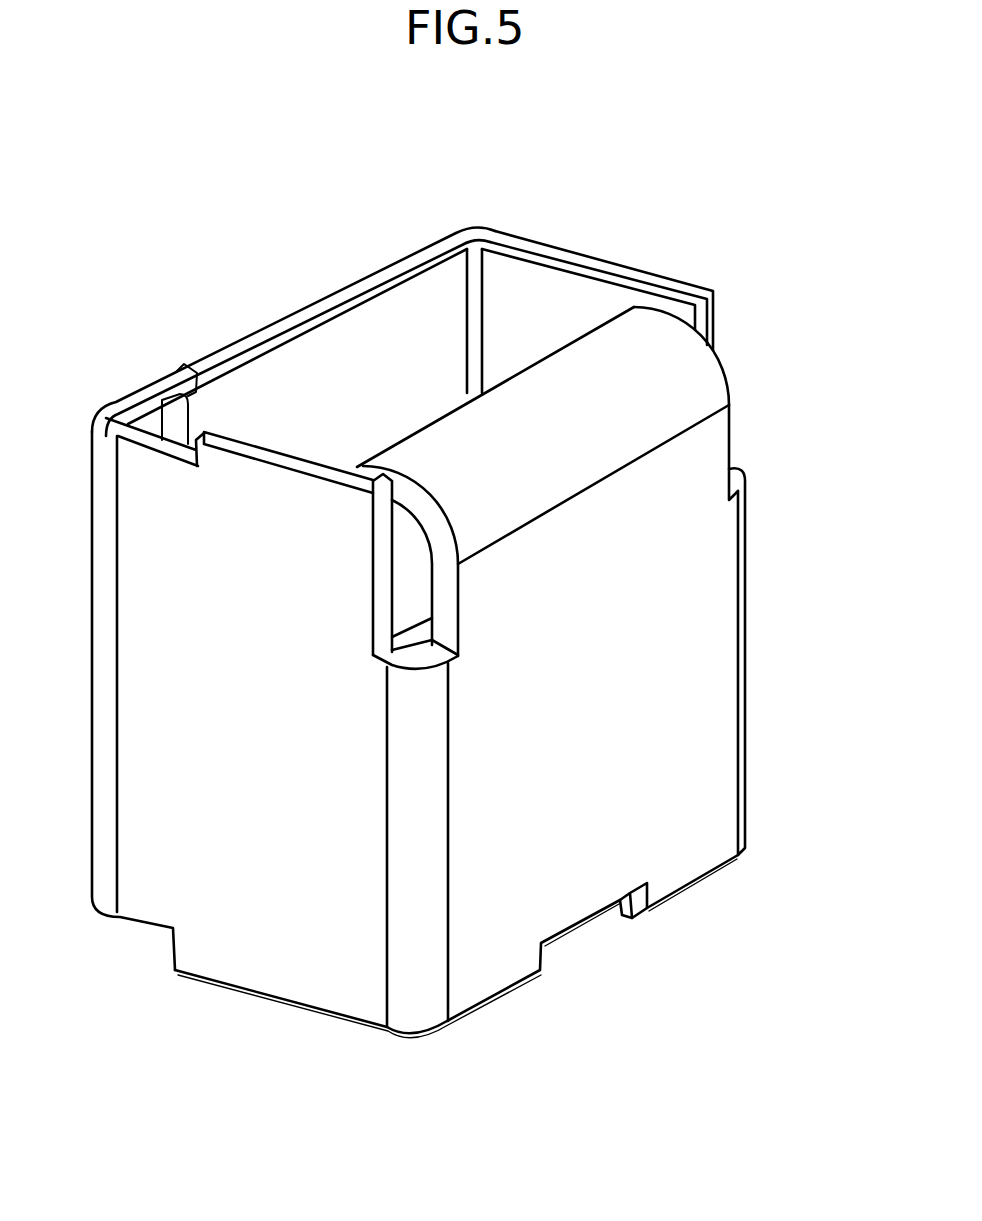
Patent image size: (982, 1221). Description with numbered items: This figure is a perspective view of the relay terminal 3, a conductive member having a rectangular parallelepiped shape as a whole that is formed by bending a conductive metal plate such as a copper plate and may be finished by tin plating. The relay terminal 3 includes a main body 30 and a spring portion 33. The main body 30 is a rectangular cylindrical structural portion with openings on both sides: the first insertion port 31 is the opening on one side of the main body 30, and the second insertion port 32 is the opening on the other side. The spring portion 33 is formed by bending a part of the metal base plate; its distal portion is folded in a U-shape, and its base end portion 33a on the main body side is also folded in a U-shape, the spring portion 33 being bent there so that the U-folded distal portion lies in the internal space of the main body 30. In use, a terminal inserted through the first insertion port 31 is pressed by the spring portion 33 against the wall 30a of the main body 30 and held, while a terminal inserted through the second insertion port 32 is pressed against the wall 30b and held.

The relay terminal 3 is at (657, 164).
The main body 30 is at (558, 246).
The wall 30a is at (277, 332).
The wall 30b is at (667, 845).
The first insertion port 31 is at (417, 317).
The second insertion port 32 is at (513, 1012).
The spring portion 33 is at (562, 375).
The base end portion 33a is at (677, 389).